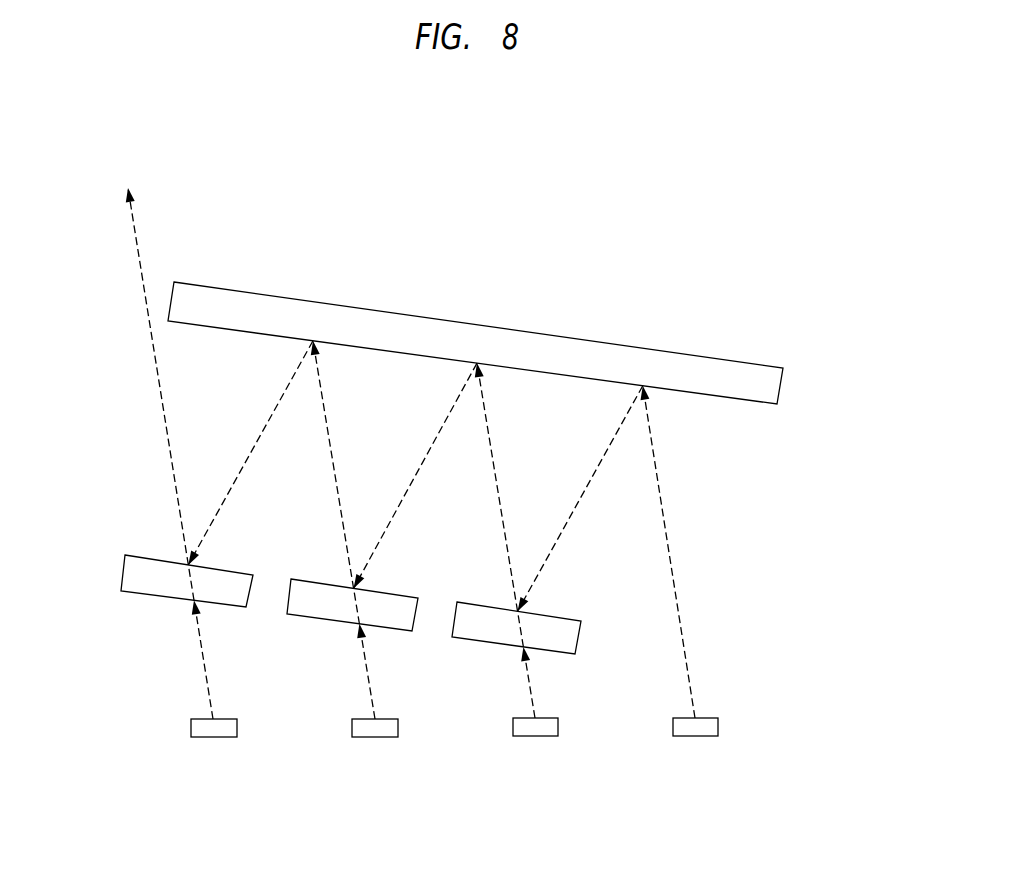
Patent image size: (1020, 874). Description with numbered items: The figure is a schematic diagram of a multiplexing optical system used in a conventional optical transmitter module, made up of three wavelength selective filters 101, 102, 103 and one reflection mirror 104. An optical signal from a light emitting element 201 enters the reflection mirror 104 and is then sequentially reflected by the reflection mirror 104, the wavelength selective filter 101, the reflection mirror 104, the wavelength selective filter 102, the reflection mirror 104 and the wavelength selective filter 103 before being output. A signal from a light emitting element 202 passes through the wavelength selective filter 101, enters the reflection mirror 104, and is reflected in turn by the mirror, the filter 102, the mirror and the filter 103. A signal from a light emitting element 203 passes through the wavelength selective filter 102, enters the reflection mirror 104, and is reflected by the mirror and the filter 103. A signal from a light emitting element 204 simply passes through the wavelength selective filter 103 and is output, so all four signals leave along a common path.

The reflection mirror 104 is at (683, 350).
The wavelength selective filter 103 is at (253, 574).
The wavelength selective filter 102 is at (418, 597).
The wavelength selective filter 101 is at (581, 621).
The light emitting element 201 is at (673, 737).
The light emitting element 202 is at (513, 737).
The light emitting element 203 is at (352, 737).
The light emitting element 204 is at (191, 737).